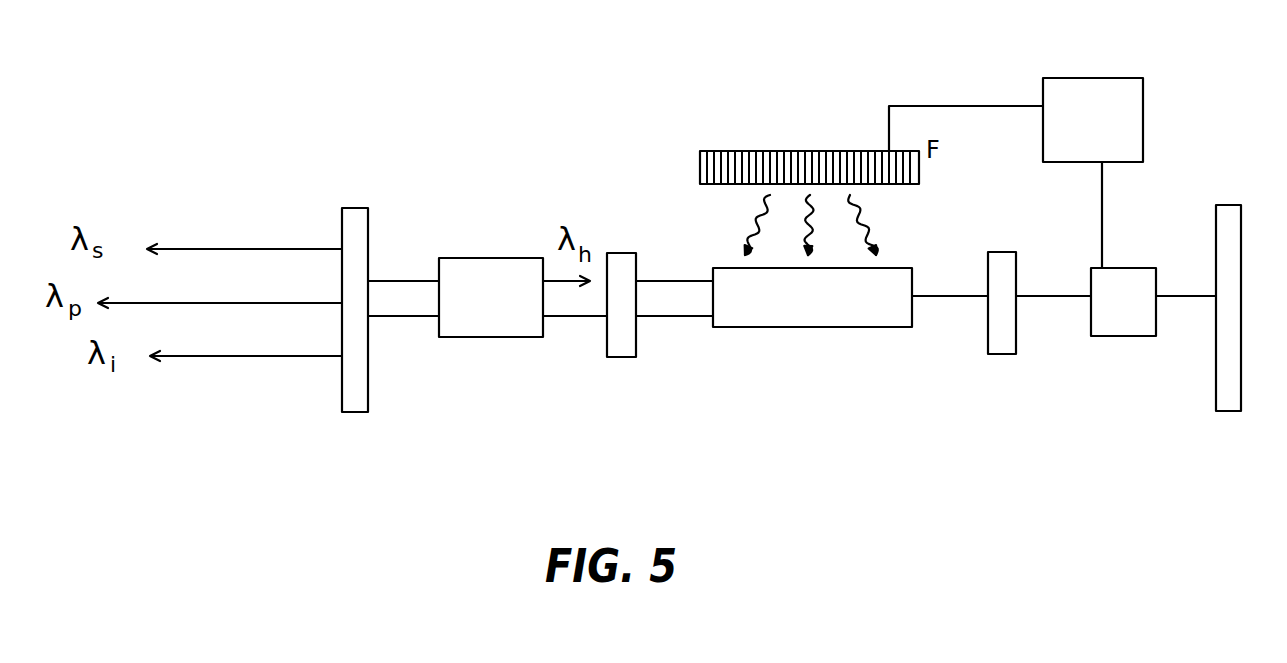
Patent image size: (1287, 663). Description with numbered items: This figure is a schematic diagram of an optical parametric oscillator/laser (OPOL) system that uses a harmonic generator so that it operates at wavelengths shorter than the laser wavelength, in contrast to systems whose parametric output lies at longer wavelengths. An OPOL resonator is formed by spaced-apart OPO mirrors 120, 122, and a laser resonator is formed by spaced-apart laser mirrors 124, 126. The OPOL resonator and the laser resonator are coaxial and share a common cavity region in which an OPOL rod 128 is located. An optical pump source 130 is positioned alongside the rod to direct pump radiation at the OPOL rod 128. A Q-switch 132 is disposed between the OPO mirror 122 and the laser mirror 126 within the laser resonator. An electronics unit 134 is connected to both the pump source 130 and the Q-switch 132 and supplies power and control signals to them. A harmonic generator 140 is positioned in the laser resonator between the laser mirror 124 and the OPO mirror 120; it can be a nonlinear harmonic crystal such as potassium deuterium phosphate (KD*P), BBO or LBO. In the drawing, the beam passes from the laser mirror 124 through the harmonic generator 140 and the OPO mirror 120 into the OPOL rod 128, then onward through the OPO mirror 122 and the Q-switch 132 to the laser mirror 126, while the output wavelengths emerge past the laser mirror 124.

The OPO mirror 120 is at (620, 253).
The OPO mirror 122 is at (1002, 252).
The laser mirror 124 is at (352, 208).
The laser mirror 126 is at (1236, 205).
The OPOL rod 128 is at (802, 327).
The optical pump source 130 is at (772, 151).
The Q-switch 132 is at (1123, 336).
The electronics unit 134 is at (1086, 78).
The harmonic generator 140 is at (489, 337).